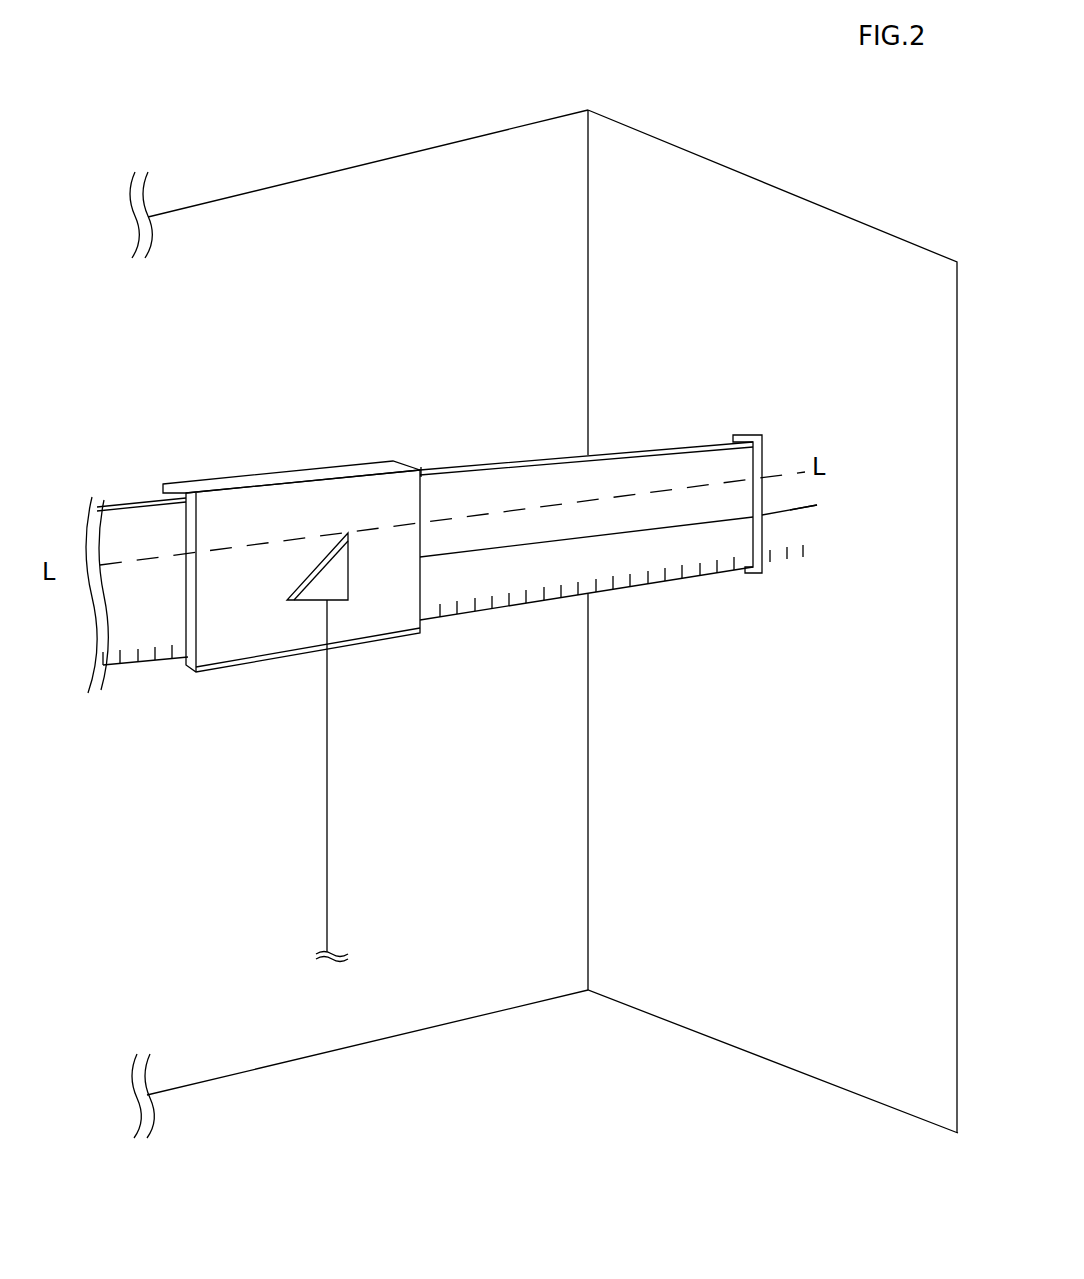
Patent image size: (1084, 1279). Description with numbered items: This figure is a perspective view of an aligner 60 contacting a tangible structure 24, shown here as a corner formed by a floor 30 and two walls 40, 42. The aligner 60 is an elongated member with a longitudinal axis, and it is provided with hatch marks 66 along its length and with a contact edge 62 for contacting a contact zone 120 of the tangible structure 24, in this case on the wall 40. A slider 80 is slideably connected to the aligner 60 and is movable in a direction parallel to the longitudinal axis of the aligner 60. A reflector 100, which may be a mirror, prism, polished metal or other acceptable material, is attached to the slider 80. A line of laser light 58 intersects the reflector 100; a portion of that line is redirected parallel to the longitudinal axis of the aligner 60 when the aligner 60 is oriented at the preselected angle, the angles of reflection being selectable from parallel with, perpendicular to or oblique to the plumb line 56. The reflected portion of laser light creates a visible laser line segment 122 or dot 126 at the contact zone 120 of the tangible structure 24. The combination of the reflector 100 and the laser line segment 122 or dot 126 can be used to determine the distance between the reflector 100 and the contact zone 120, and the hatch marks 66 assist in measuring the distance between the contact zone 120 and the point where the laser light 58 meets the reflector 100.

The tangible structure 24 is at (704, 550).
The floor 30 is at (584, 1090).
The wall 40 is at (742, 1020).
The wall 42 is at (475, 982).
The plumb line 56 is at (325, 814).
The line of laser light 58 is at (458, 560).
The aligner 60 is at (487, 465).
The contact edge 62 is at (758, 543).
The hatch marks 66 is at (613, 585).
The slider 80 is at (355, 460).
The reflector 100 is at (312, 563).
The contact zone 120 is at (748, 432).
The laser line segment 122 is at (803, 497).
The dot 126 is at (805, 517).